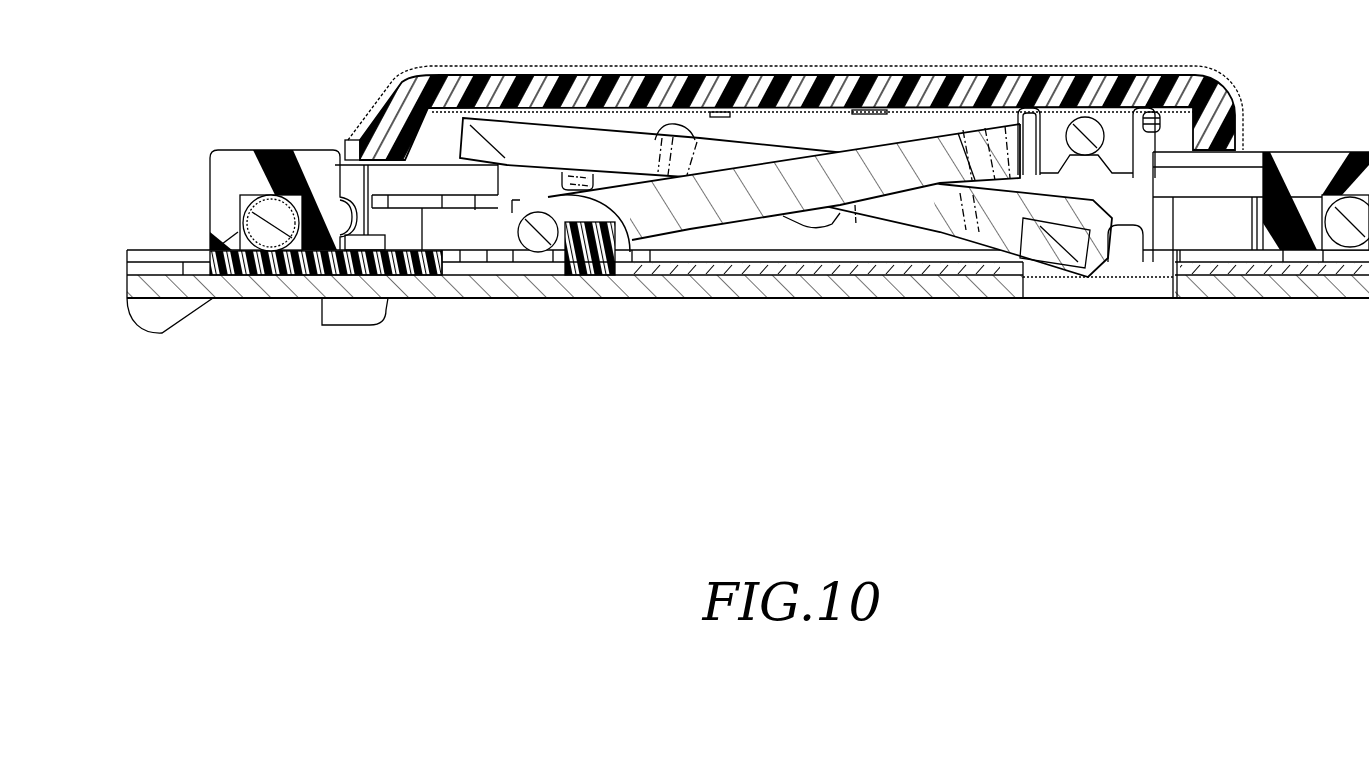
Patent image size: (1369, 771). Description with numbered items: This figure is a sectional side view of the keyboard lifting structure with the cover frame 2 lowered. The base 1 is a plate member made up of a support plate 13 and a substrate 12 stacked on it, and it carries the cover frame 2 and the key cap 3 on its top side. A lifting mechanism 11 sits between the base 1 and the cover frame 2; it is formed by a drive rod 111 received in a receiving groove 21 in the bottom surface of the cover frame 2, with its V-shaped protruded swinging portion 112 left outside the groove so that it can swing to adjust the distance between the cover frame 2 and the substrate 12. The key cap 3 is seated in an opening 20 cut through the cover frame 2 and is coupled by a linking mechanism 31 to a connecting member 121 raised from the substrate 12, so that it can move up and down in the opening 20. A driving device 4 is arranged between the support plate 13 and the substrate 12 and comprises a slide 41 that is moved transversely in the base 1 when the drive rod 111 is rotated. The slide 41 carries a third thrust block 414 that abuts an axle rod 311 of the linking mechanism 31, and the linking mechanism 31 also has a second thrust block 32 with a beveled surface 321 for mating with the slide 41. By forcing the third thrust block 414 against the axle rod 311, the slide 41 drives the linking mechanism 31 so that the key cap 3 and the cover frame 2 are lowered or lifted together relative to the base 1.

The base 1 is at (157, 385).
The lifting mechanism 11 is at (263, 380).
The drive rod 111 is at (270, 235).
The protruded swinging portion 112 is at (343, 216).
The substrate 12 is at (682, 268).
The connecting member 121 is at (533, 203).
The support plate 13 is at (167, 290).
The cover frame 2 is at (240, 172).
The opening 20 is at (1234, 176).
The receiving groove 21 is at (243, 210).
The key cap 3 is at (727, 92).
The linking mechanism 31 is at (877, 155).
The axle rod 311 is at (543, 230).
The second thrust block 32 is at (833, 222).
The beveled surface 321 is at (862, 219).
The driving device 4 is at (371, 380).
The slide 41 is at (378, 265).
The third thrust block 414 is at (600, 265).